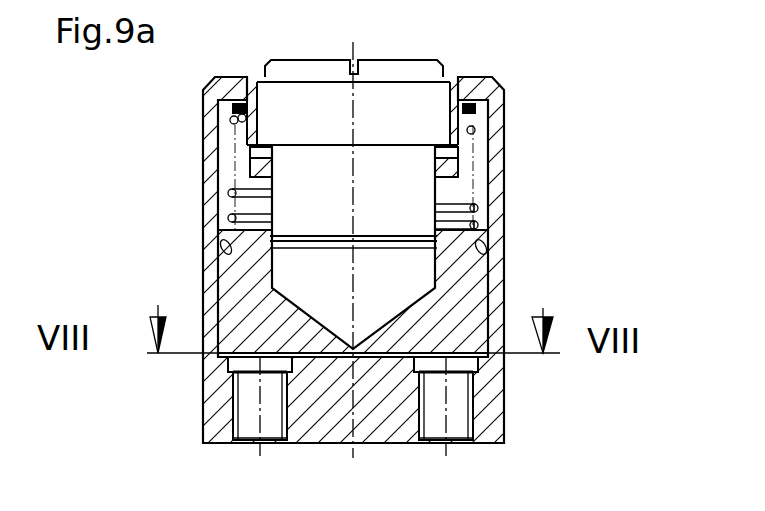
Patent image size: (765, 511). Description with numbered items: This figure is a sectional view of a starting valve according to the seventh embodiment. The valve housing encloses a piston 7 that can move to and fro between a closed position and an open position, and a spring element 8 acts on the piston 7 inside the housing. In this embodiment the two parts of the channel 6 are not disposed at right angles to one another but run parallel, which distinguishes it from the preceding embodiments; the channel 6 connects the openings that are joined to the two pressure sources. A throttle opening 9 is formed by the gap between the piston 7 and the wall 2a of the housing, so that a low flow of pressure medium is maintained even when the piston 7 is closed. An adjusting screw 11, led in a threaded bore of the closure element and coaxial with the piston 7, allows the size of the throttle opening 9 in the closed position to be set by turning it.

The wall of the housing 2a is at (333, 382).
The channel 6 is at (260, 443).
The piston 7 is at (240, 277).
The spring element 8 is at (440, 212).
The throttle opening 9 is at (438, 308).
The adjusting screw 11 is at (407, 109).